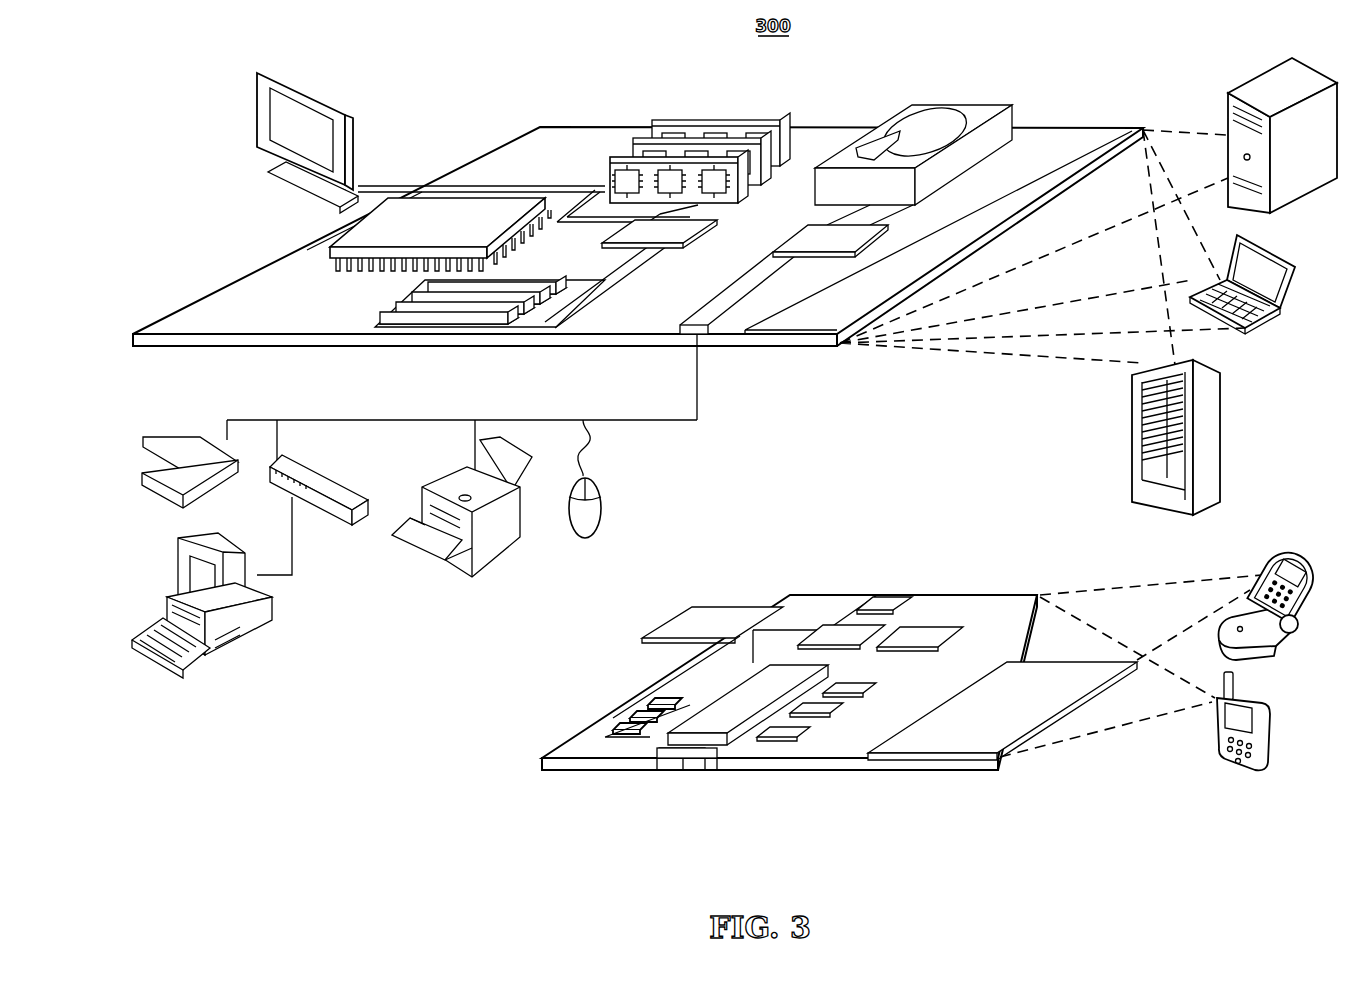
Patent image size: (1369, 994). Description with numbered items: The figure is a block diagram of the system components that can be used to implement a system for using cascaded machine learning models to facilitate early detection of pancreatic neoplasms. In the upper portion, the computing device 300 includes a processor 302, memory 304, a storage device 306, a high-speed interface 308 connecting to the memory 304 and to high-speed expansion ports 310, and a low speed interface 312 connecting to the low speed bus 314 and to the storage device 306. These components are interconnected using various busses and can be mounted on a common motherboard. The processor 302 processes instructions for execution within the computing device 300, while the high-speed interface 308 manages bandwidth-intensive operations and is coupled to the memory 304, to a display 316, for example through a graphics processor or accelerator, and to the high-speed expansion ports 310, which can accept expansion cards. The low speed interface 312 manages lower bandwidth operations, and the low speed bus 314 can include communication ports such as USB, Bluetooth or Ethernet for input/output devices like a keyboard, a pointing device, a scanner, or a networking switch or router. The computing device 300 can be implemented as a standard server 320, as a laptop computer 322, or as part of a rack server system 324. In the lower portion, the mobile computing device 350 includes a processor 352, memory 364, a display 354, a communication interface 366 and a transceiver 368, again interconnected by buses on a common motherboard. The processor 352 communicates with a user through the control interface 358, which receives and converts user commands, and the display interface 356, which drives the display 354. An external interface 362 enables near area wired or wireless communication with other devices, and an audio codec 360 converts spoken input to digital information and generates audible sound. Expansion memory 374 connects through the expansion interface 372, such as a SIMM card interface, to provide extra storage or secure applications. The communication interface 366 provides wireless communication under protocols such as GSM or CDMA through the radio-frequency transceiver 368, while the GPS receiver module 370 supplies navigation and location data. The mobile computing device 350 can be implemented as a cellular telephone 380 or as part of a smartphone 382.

The computing device 300 is at (460, 88).
The processor 302 is at (307, 248).
The memory 304 is at (712, 120).
The storage device 306 is at (903, 104).
The high-speed interface 308 is at (641, 228).
The high-speed expansion ports 310 is at (405, 307).
The low speed interface 312 is at (805, 232).
The low speed bus 314 is at (705, 336).
The display 316 is at (268, 72).
The standard server 320 is at (1228, 109).
The laptop computer 322 is at (1245, 330).
The rack server system 324 is at (1132, 462).
The mobile computing device 350 is at (508, 776).
The processor 352 is at (720, 727).
The display 354 is at (960, 740).
The display interface 356 is at (790, 742).
The control interface 358 is at (822, 715).
The audio codec 360 is at (850, 695).
The external interface 362 is at (683, 762).
The memory 364 is at (630, 716).
The communication interface 366 is at (833, 632).
The transceiver 368 is at (915, 635).
The GPS receiver module 370 is at (888, 600).
The expansion interface 372 is at (755, 610).
The expansion memory 374 is at (683, 608).
The cellular telephone 380 is at (1270, 546).
The smartphone 382 is at (1217, 730).